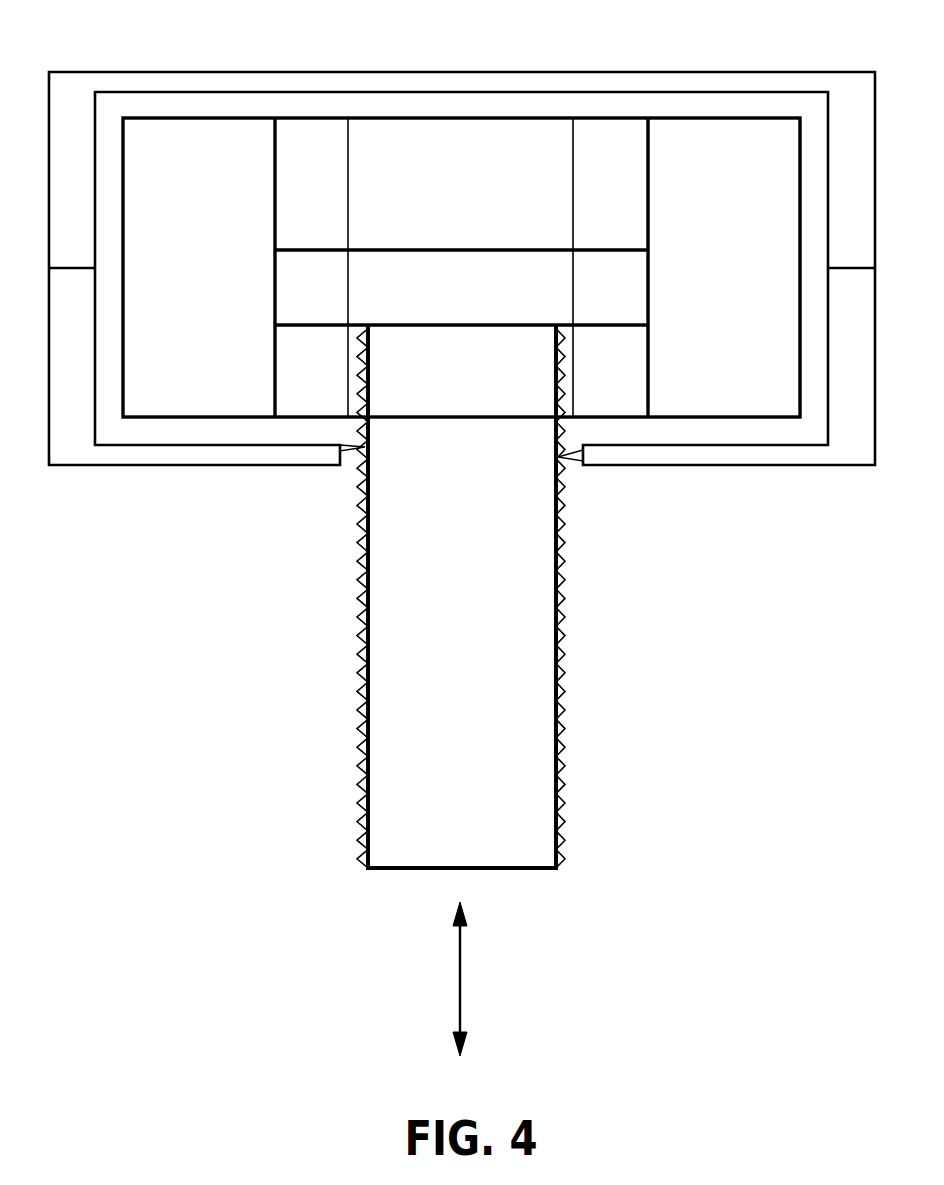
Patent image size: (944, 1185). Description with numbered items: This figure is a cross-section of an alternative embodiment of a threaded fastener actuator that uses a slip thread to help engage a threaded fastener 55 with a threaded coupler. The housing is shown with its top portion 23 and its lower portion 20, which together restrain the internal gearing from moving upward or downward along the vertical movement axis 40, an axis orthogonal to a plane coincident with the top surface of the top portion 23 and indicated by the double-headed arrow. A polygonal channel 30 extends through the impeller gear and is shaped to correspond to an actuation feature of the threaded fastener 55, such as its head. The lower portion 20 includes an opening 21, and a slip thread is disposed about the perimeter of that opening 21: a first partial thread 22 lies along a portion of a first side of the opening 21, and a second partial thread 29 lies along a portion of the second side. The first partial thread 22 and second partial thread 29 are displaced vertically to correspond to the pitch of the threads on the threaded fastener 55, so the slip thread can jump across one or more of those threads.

The lower portion of the housing 20 is at (81, 466).
The opening 21 is at (352, 452).
The first partial thread 22 is at (369, 460).
The top portion of the housing 23 is at (157, 72).
The second partial thread 29 is at (566, 461).
The polygonal channel 30 is at (338, 164).
The vertical movement axis 40 is at (461, 992).
The threaded fastener 55 is at (559, 563).